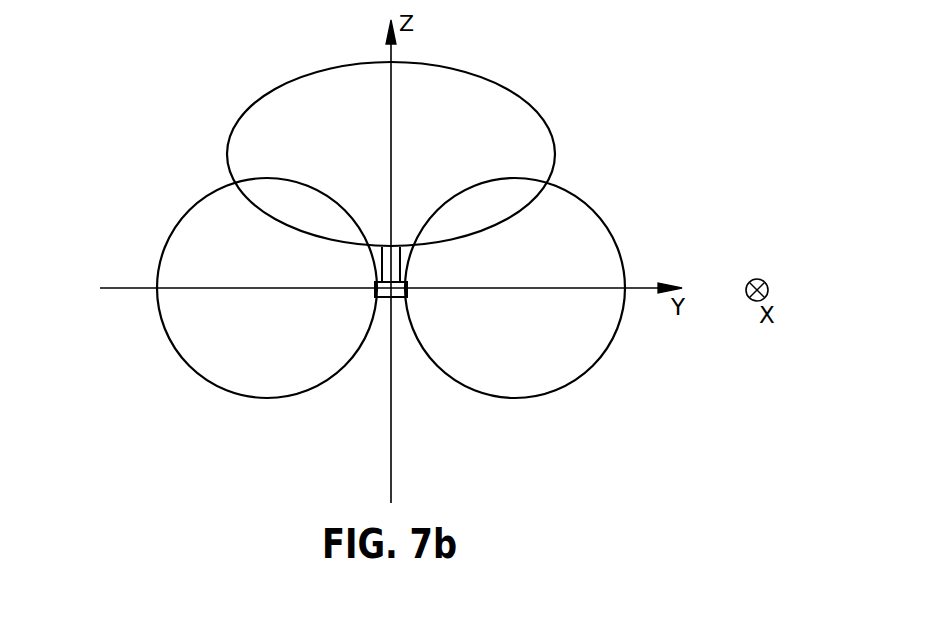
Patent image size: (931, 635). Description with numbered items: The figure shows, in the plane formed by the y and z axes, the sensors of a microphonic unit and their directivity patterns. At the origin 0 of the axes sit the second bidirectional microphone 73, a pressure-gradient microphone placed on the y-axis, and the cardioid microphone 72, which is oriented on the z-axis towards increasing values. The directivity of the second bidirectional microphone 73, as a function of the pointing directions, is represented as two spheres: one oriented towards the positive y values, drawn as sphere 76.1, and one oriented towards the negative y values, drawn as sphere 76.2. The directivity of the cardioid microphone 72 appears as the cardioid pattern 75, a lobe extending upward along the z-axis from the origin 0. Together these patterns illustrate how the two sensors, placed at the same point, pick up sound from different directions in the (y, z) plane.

The cardioid directivity pattern 75 is at (477, 73).
The positive-y directivity sphere 76.1 is at (540, 398).
The negative-y directivity sphere 76.2 is at (239, 395).
The cardioid microphone 72 is at (400, 263).
The second bidirectional microphone 73 is at (403, 297).
The origin 0 is at (388, 294).